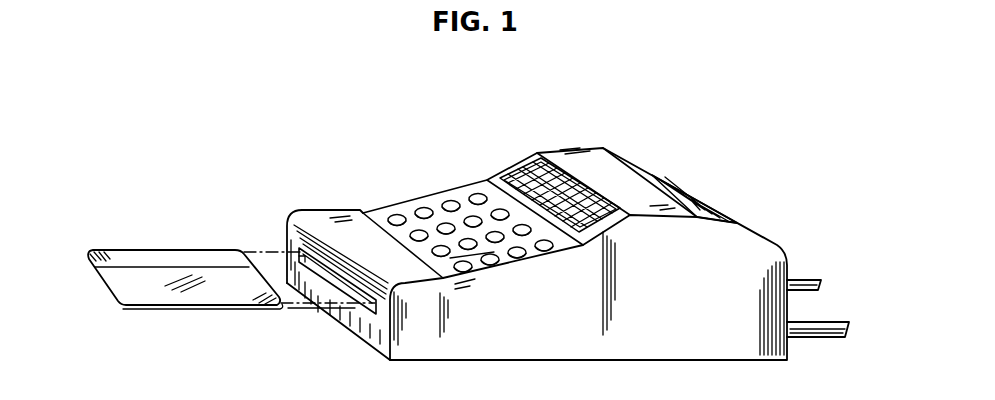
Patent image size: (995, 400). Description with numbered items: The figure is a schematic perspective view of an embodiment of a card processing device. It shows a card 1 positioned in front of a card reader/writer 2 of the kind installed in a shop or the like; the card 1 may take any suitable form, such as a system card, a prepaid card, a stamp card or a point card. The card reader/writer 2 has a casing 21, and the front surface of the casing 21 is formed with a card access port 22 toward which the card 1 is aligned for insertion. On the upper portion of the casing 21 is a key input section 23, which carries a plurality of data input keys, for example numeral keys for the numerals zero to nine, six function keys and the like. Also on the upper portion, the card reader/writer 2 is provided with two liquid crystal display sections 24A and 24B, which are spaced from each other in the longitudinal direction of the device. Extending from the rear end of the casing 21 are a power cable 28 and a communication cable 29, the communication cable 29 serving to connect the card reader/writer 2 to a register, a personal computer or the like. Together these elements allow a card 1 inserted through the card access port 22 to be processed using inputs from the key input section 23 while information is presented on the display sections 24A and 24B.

The card 1 is at (206, 251).
The card reader/writer 2 is at (618, 146).
The casing 21 is at (324, 216).
The card access port 22 is at (346, 292).
The key input section 23 is at (423, 210).
The liquid crystal display section 24A is at (538, 172).
The liquid crystal display section 24B is at (680, 150).
The power cable 28 is at (823, 322).
The communication cable 29 is at (805, 280).